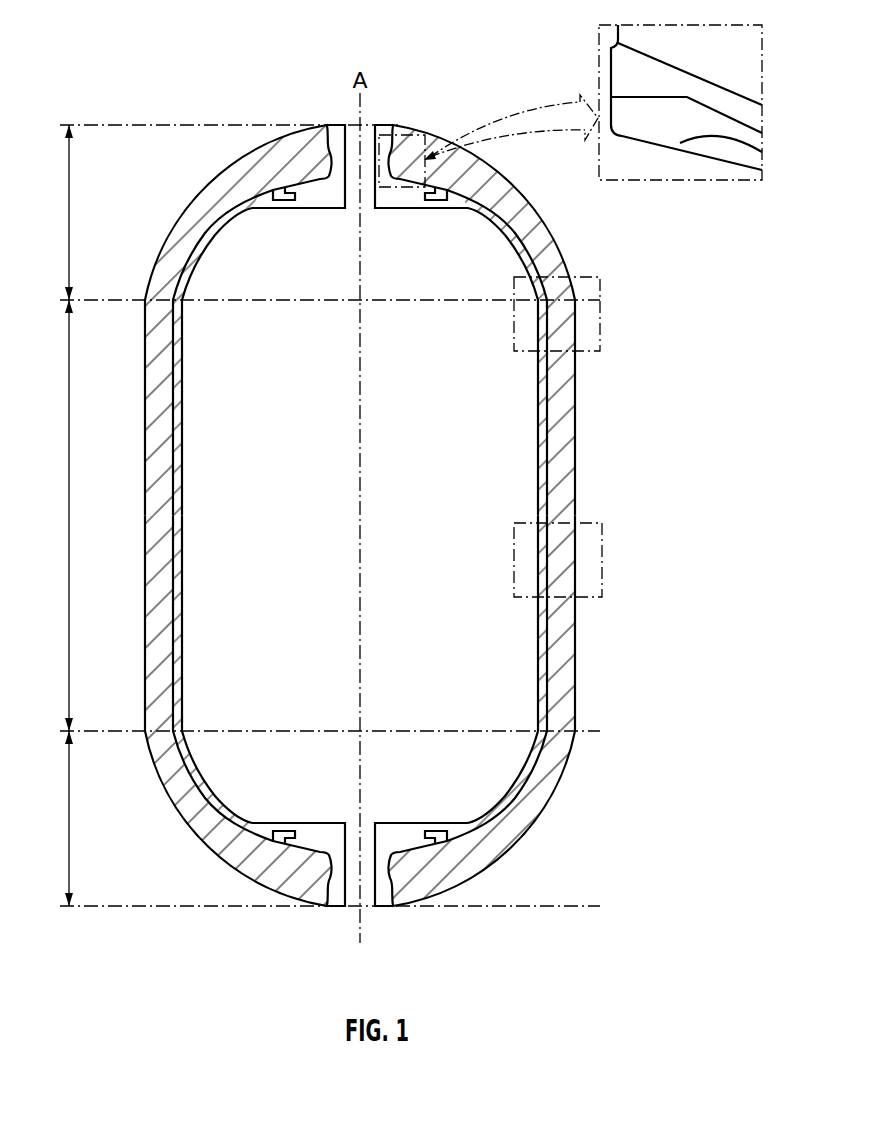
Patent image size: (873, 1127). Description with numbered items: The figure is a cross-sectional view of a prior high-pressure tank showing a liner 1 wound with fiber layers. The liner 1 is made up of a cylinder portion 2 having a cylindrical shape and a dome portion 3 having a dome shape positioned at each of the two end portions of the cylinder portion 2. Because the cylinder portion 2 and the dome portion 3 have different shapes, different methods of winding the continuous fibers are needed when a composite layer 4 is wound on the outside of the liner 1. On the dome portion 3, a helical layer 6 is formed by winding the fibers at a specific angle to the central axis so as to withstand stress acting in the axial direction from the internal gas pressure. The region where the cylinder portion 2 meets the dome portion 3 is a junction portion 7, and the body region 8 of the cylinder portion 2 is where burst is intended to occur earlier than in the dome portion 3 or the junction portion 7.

The liner 1 is at (528, 400).
The cylinder portion 2 is at (40, 517).
The dome portion 3 is at (40, 231).
The composite layer 4 is at (590, 407).
The helical layer 6 is at (718, 123).
The junction portion 7 is at (559, 305).
The body region 8 is at (560, 549).